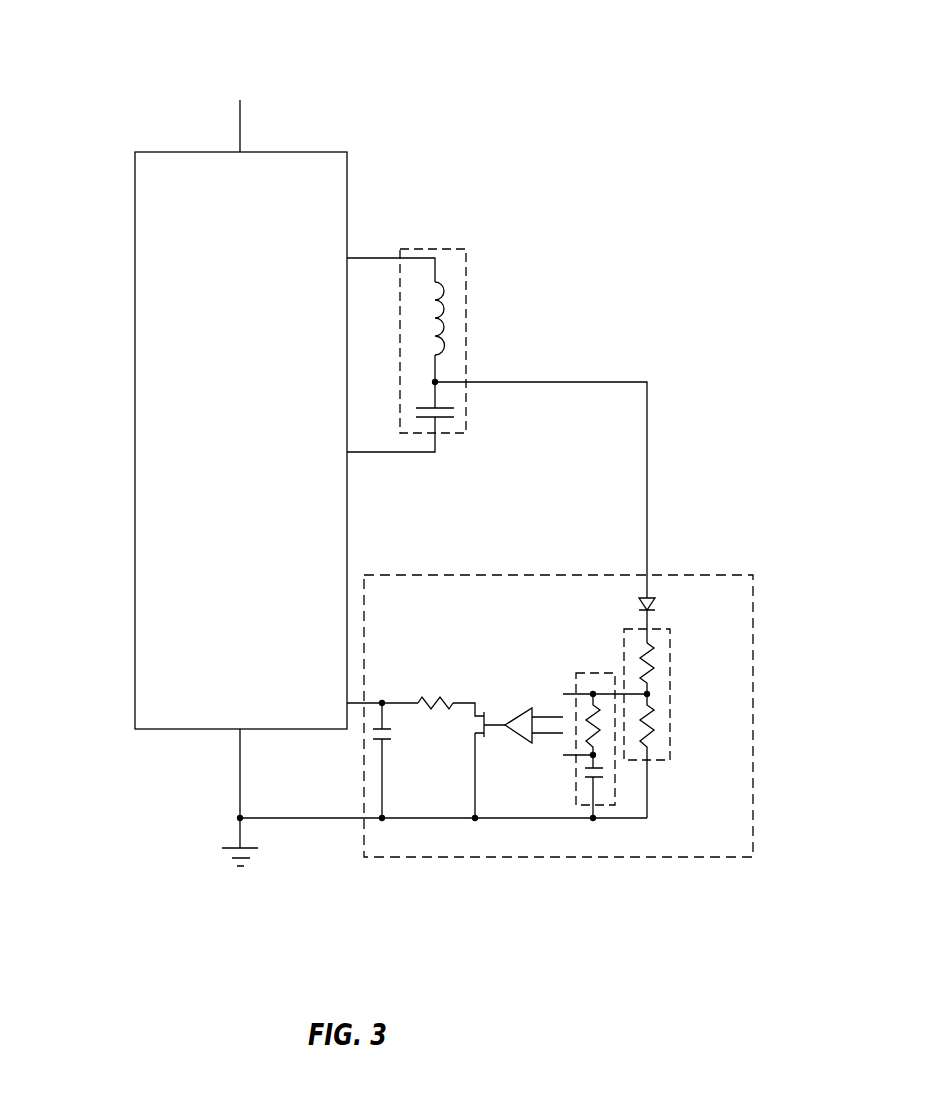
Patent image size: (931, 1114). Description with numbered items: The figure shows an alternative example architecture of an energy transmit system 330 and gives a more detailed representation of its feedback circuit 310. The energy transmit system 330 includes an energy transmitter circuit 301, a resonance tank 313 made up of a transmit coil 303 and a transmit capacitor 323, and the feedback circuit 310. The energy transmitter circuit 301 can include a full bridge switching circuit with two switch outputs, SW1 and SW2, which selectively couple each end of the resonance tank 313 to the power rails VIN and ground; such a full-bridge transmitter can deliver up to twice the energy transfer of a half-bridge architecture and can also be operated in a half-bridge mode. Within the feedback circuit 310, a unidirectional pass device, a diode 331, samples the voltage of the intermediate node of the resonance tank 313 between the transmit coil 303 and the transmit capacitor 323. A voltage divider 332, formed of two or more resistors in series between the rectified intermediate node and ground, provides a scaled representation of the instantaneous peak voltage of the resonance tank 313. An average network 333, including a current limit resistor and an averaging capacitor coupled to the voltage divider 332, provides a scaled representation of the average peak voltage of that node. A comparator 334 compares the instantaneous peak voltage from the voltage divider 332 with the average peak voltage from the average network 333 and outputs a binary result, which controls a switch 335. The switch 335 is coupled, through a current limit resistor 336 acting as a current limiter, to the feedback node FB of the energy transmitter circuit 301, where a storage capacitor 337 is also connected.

The energy transmit system 330 is at (279, 40).
The energy transmitter circuit 301 is at (135, 208).
The resonance tank 313 is at (410, 249).
The transmit coil 303 is at (452, 313).
The transmit capacitor 323 is at (440, 418).
The feedback circuit 310 is at (753, 608).
The diode 331 is at (637, 599).
The voltage divider 332 is at (670, 733).
The average network 333 is at (615, 778).
The comparator 334 is at (520, 717).
The switch 335 is at (486, 730).
The current limit resistor 336 is at (420, 700).
The storage capacitor 337 is at (387, 742).